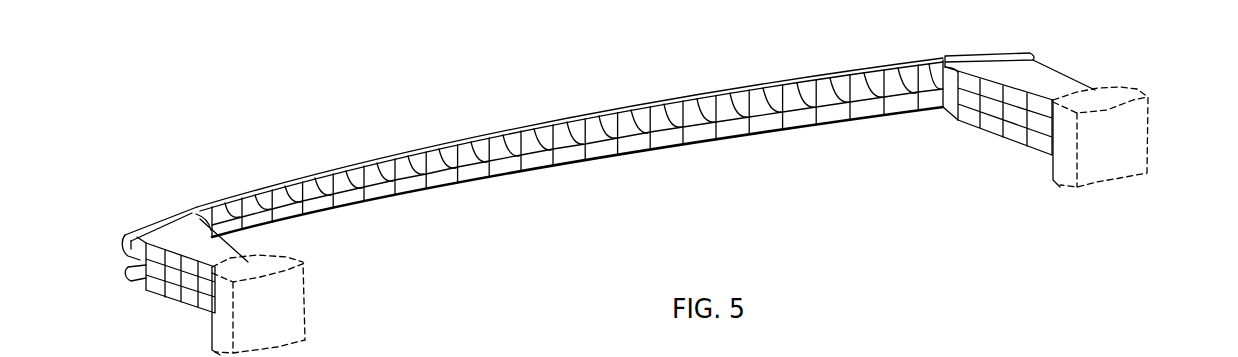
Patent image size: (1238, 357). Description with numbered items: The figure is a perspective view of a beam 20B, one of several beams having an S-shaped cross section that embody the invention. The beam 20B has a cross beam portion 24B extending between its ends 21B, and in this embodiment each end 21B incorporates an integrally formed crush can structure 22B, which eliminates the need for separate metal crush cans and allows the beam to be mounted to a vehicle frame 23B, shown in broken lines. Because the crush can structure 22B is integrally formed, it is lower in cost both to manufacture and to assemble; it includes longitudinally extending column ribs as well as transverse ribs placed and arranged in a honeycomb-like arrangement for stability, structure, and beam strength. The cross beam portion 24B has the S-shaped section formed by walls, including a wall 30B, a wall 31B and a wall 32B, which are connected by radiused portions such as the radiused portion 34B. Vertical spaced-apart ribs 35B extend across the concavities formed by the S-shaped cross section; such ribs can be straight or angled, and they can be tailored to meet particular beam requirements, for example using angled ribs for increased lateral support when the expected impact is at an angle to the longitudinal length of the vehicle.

The beam 20B is at (210, 100).
The end 21B is at (134, 214).
The crush can structure 22B is at (165, 300).
The vehicle frame rail 23B is at (303, 250).
The bumper beam 24B is at (581, 108).
The top wall 30B is at (379, 147).
The vertical ribs 31B is at (462, 157).
The bottom wall 32B is at (731, 148).
The rear wall 34B is at (600, 148).
The curved ribs 35B is at (690, 107).